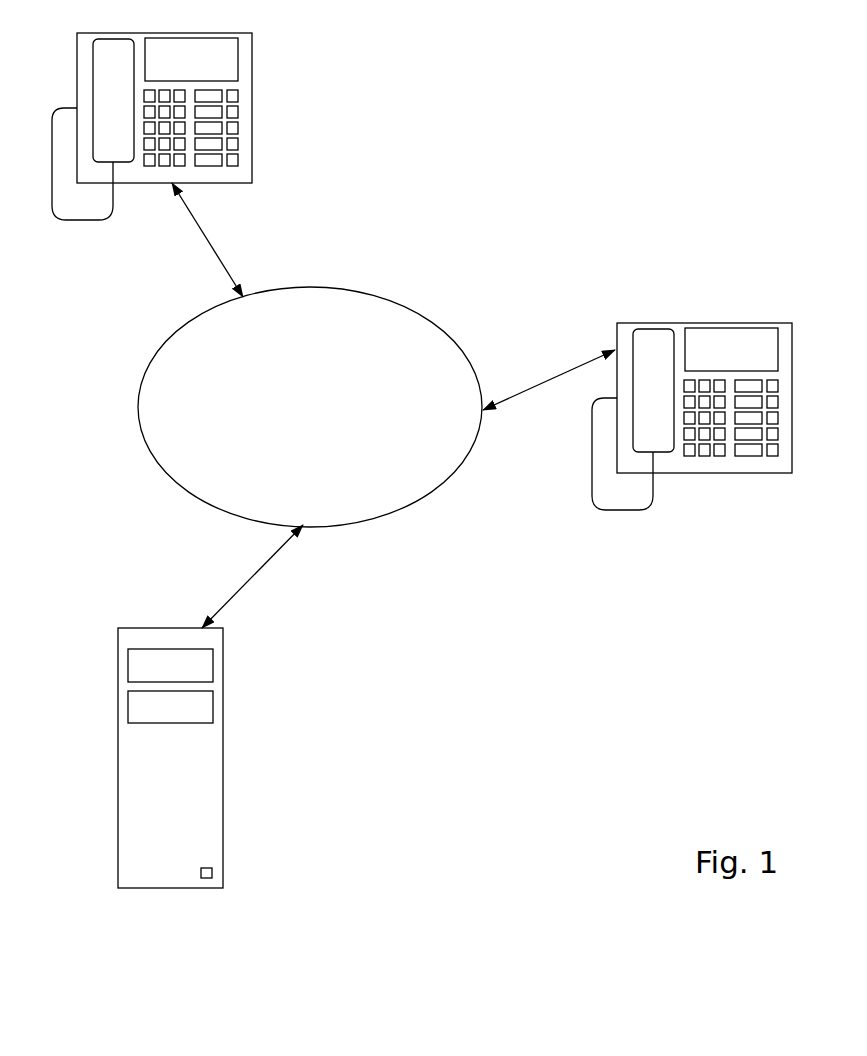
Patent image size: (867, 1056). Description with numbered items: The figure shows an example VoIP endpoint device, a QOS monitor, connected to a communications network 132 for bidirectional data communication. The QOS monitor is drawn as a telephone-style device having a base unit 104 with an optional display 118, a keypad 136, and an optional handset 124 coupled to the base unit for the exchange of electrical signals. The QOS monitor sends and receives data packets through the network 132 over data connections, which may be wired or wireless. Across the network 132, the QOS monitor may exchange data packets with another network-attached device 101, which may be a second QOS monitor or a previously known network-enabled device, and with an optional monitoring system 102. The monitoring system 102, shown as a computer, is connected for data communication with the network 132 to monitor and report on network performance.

The network-attached device 101 is at (730, 473).
The monitoring system 102 is at (148, 888).
The base unit 104 is at (252, 145).
The display 118 is at (238, 60).
The handset 124 is at (93, 79).
The communications network 132 is at (292, 444).
The keypad 136 is at (257, 168).